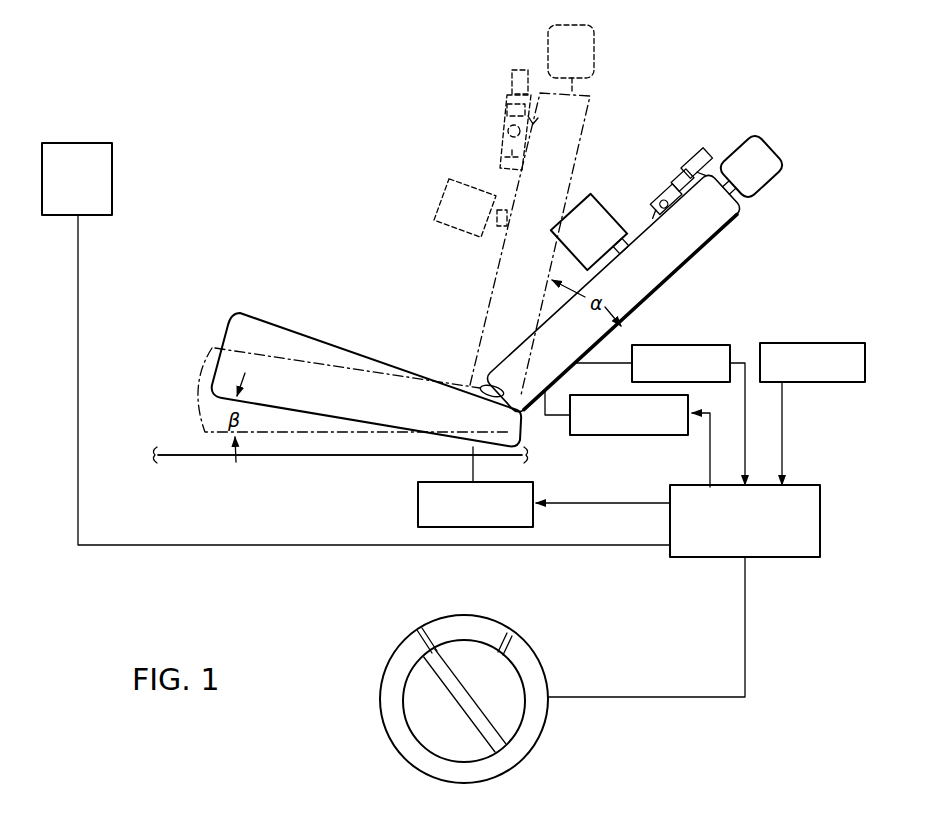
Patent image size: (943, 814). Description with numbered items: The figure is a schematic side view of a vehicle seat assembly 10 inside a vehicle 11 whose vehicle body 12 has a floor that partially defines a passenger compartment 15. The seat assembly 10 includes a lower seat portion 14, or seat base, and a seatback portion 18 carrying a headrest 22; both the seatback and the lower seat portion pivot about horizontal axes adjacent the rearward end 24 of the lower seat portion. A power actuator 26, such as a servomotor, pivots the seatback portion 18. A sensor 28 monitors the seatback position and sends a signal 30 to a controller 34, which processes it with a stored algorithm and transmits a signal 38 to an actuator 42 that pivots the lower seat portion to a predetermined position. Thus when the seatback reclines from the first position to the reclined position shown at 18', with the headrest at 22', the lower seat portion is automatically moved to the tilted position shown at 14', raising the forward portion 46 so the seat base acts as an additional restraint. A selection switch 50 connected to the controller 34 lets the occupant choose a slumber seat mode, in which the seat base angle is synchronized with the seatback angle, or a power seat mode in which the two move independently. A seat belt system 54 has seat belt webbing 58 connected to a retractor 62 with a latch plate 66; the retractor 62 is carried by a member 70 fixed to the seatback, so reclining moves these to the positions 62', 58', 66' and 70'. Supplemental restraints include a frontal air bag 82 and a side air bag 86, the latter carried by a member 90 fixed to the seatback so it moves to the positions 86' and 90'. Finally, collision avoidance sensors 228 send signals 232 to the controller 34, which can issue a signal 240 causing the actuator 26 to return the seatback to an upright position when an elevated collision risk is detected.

The vehicle seat assembly 10 is at (318, 205).
The vehicle 11 is at (232, 52).
The vehicle body 12 is at (208, 460).
The lower seat portion 14 is at (325, 393).
The lower seat portion in second position 14' is at (366, 355).
The passenger compartment 15 is at (230, 229).
The seatback portion 18 is at (522, 244).
The seatback portion in second position 18' is at (630, 293).
The headrest 22 is at (601, 58).
The headrest in second position 22' is at (747, 169).
The rearward end 24 is at (447, 375).
The power actuator 26 is at (606, 437).
The sensor 28 is at (686, 345).
The signal 30 is at (745, 352).
The controller 34 is at (805, 557).
The signal 38 is at (645, 503).
The actuator 42 is at (418, 504).
The forward portion 46 is at (212, 298).
The selection switch 50 is at (383, 762).
The seat belt system 54 is at (496, 64).
The seat belt webbing 58 is at (487, 129).
The seat belt webbing in new position 58' is at (646, 189).
The retractor 62 is at (524, 59).
The retractor in new position 62' is at (692, 144).
The latch plate 66 is at (490, 106).
The latch plate in new position 66' is at (664, 163).
The member 70 is at (551, 133).
The member in new position 70' is at (722, 143).
The frontal air bag 82 is at (72, 143).
The side air bag 86 is at (446, 225).
The side air bag in new position 86' is at (589, 214).
The member 90 is at (472, 248).
The member in new position 90' is at (641, 259).
The sensors 228 is at (812, 343).
The signals 232 is at (782, 417).
The signal 240 is at (713, 433).